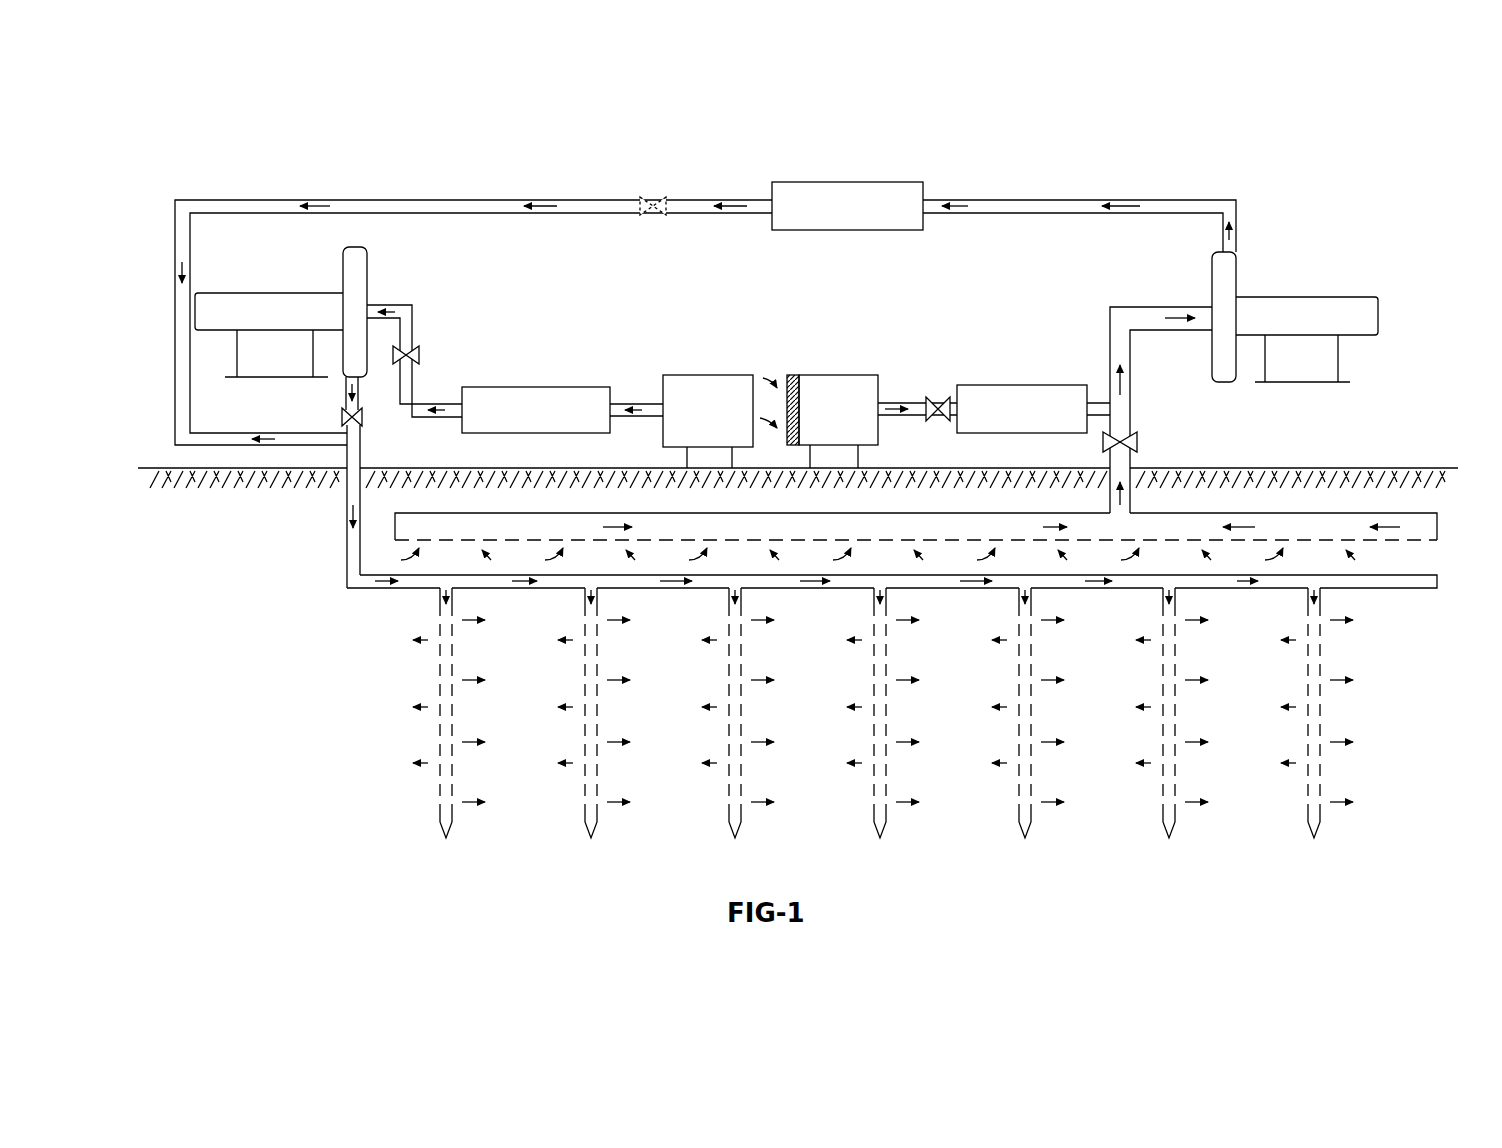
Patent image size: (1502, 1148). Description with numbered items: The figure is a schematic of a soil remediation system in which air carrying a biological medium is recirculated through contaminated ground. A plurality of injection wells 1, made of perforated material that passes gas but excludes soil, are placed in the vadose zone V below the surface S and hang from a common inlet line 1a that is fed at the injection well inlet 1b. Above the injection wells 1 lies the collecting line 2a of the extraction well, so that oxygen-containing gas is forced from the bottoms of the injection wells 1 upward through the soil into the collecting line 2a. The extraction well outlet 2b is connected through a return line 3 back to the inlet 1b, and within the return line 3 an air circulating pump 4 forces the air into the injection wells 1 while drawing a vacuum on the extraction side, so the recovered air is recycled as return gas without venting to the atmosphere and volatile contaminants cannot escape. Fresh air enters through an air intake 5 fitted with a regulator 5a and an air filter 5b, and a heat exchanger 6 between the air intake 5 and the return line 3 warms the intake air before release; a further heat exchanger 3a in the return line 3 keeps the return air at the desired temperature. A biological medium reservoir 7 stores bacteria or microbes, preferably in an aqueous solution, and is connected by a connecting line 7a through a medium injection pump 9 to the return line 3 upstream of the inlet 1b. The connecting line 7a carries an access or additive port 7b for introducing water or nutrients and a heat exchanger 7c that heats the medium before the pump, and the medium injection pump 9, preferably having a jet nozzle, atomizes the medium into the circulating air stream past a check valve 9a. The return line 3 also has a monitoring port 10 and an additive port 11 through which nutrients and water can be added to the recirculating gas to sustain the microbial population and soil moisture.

The injection well 1 is at (1032, 813).
The common inlet line 1a is at (690, 590).
The inlet of the injection well 1b is at (361, 468).
The collecting line 2a is at (1275, 512).
The outlet of the extraction well 2b is at (1133, 422).
The return line 3 is at (1075, 198).
The heat exchanger 3a is at (850, 181).
The air circulating pump 4 is at (1310, 295).
The air intake 5 is at (855, 374).
The regulator 5a is at (940, 397).
The air filter 5b is at (793, 374).
The heat exchanger 6 is at (1020, 384).
The biological medium reservoir 7 is at (703, 374).
The connecting line 7a is at (410, 320).
The access or additive port 7b is at (421, 352).
The heat exchanger 7c is at (517, 386).
The medium injection pump 9 is at (270, 292).
The check valve 9a is at (342, 417).
The monitoring port 10 is at (1140, 442).
The additive port 11 is at (656, 195).
The surface S is at (1410, 467).
The vadose zone V is at (328, 735).